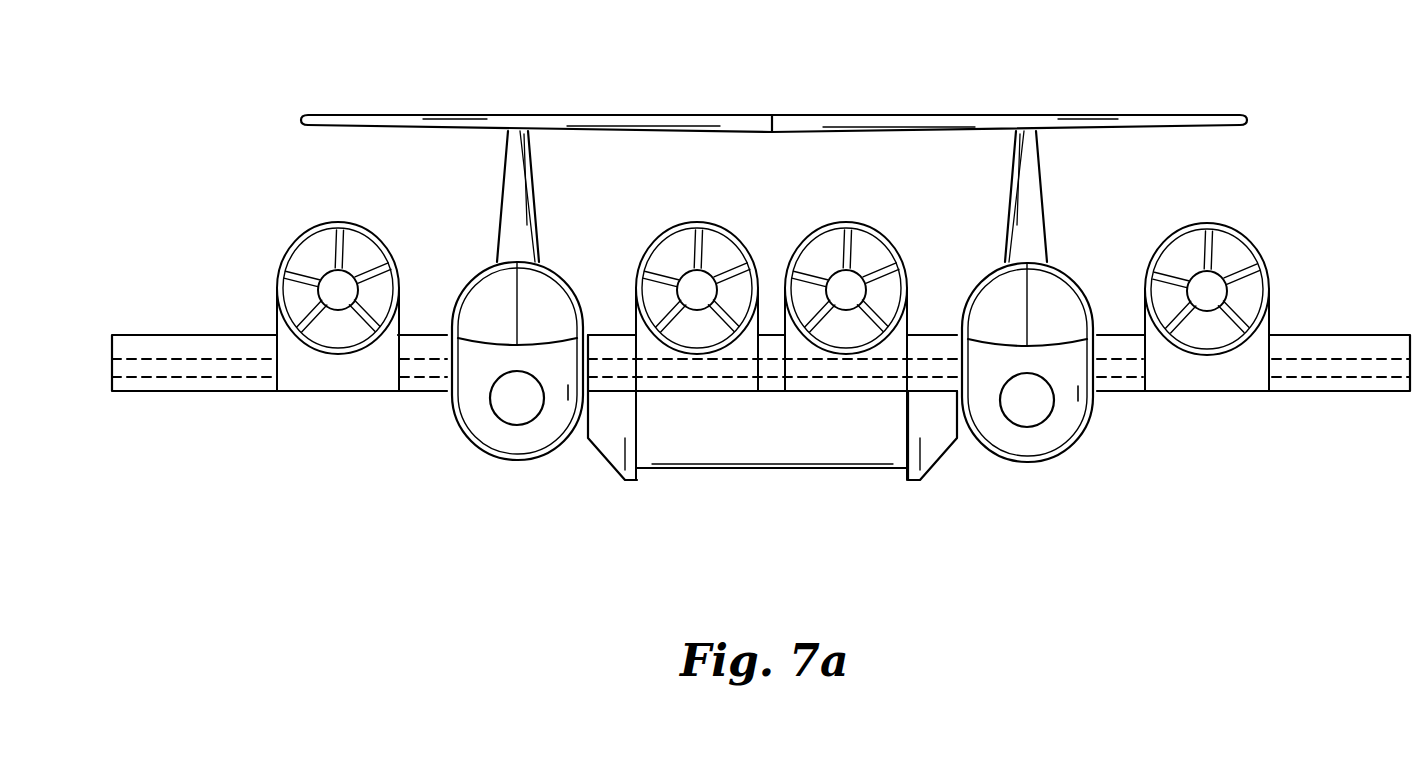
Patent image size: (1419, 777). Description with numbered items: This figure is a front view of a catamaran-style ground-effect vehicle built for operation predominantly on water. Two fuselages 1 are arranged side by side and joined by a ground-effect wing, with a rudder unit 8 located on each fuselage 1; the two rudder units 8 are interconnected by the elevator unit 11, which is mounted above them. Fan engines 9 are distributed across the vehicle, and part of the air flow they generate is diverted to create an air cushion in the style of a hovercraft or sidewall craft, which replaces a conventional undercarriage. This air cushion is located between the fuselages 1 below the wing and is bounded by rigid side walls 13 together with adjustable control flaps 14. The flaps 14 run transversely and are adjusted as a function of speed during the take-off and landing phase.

The fuselage 1 is at (473, 410).
The rudder unit 8 is at (1032, 230).
The fan engine 9 is at (1240, 262).
The elevator unit 11 is at (797, 123).
The rigid side wall 13 is at (613, 435).
The adjustable control flap 14 is at (843, 435).